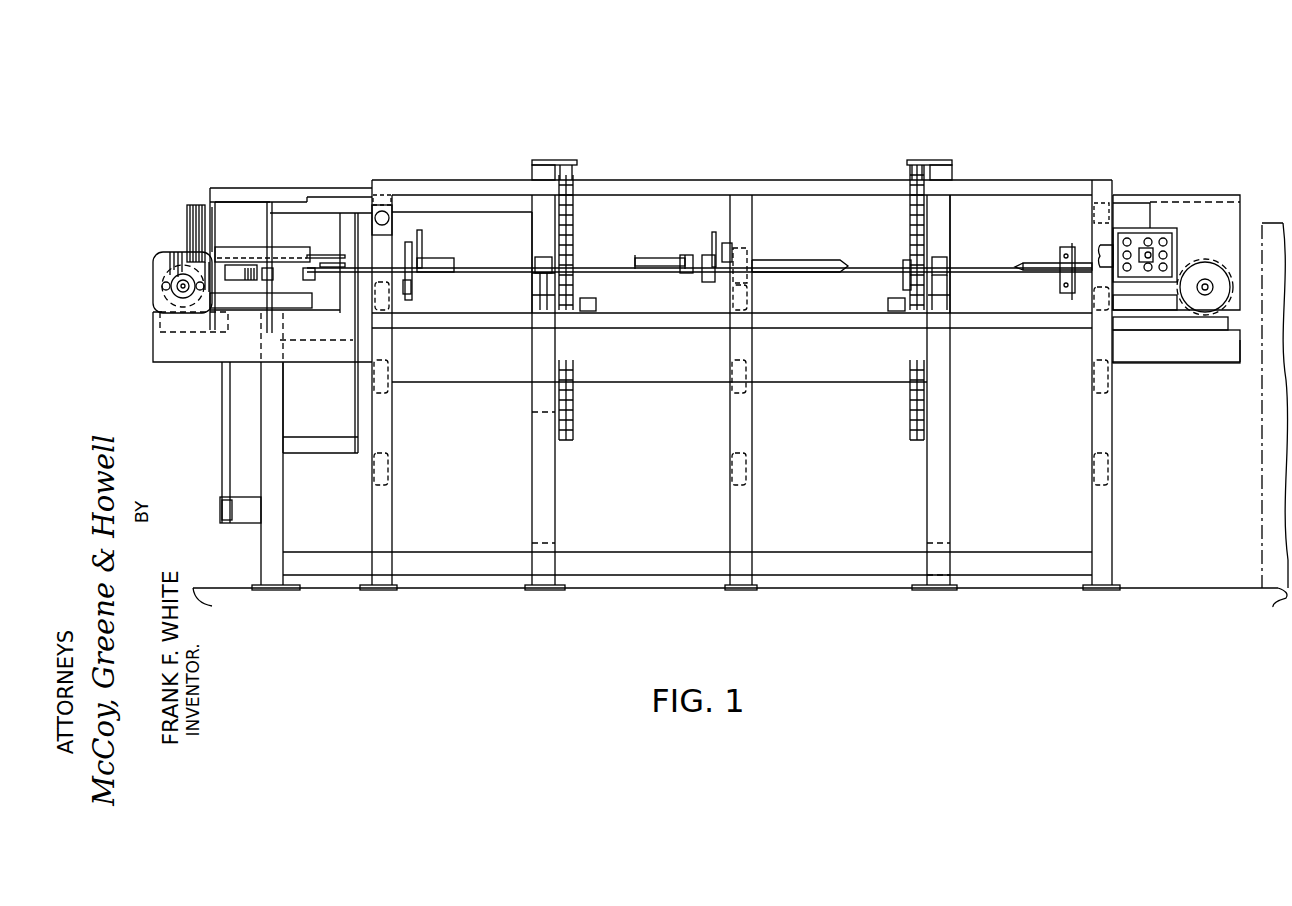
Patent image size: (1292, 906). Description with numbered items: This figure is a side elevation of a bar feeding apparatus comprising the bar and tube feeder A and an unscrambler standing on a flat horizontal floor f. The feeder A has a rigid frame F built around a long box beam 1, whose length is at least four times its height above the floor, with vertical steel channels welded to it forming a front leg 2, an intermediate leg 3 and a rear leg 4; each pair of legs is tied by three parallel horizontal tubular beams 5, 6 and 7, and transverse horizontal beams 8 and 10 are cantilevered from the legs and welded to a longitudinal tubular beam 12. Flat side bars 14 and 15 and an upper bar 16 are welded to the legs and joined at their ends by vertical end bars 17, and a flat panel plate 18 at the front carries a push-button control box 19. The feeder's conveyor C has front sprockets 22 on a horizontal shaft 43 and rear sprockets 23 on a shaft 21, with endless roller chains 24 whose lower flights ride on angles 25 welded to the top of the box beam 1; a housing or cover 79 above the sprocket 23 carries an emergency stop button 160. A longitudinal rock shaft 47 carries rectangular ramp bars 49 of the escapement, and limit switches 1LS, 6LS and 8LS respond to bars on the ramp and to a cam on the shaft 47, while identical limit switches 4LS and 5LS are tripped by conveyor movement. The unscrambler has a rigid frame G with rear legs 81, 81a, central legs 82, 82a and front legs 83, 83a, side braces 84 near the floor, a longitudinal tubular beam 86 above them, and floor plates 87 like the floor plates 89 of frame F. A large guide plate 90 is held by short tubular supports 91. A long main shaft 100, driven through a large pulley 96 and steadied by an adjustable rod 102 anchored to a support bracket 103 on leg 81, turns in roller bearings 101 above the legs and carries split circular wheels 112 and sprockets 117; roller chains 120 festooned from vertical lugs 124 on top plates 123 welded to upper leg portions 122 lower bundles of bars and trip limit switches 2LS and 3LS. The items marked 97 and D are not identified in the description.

The box beam 1 is at (186, 352).
The front leg 2 is at (1110, 552).
The intermediate leg 3 is at (748, 540).
The rear leg 4 is at (385, 517).
The horizontal tubular beam 5 is at (390, 458).
The horizontal tubular beam 6 is at (388, 392).
The horizontal tubular beam 7 is at (385, 325).
The transverse horizontal beam 8 is at (1100, 195).
The transverse horizontal beam 10 is at (385, 200).
The longitudinal horizontal tubular beam 12 is at (822, 182).
The flat side bar 14 is at (257, 252).
The flat side bar 15 is at (297, 330).
The upper bar 16 is at (236, 190).
The vertical end bar 17 is at (210, 205).
The flat panel plate 18 is at (1237, 217).
The push-button control box 19 is at (1138, 228).
The horizontal shaft 21 is at (170, 283).
The front sprockets 22 is at (1190, 262).
The rear sprockets 23 is at (160, 272).
The endless roller chain 24 is at (224, 310).
The angle 25 is at (503, 330).
The horizontal shaft 43 is at (1208, 295).
The longitudinal rock shaft 47 is at (442, 258).
The rectangular ramp bar 49 is at (415, 232).
The housing or cover 79 is at (156, 268).
The rear leg 81 is at (278, 500).
The rear leg 81a is at (275, 262).
The central leg 82 is at (547, 496).
The central leg 82a is at (532, 243).
The front leg 83 is at (937, 503).
The front leg 83a is at (955, 200).
The side brace 84 is at (350, 572).
The longitudinal tubular beam 86 is at (466, 200).
The floor plate 87 is at (268, 590).
The floor plate 89 is at (393, 592).
The guide plate 90 is at (347, 212).
The tubular support 91 is at (340, 340).
The large pulley 96 is at (188, 220).
The spring 97 is at (198, 205).
The main shaft 100 is at (496, 273).
The roller bearing 101 is at (545, 258).
The adjustable rod 102 is at (222, 430).
The support bracket 103 is at (250, 517).
The split circular wheel 112 is at (410, 292).
The sprocket 117 is at (905, 262).
The roller chain 120 is at (575, 398).
The upper leg portion 122 is at (535, 170).
The top plate 123 is at (560, 160).
The vertical lug 124 is at (575, 170).
The emergency stop button 160 is at (178, 293).
The limit switch 1LS is at (726, 243).
The limit switch 2LS is at (600, 306).
The limit switch 3LS is at (892, 312).
The limit switch 4LS is at (265, 268).
The limit switch 5LS is at (308, 268).
The limit switch 6LS is at (752, 255).
The limit switch 8LS is at (690, 262).
The bar and tube feeder A is at (1208, 182).
The conveyor C is at (158, 228).
The direction D is at (1260, 492).
The frame F is at (1088, 432).
The frame G is at (346, 190).
The floor f is at (1052, 588).